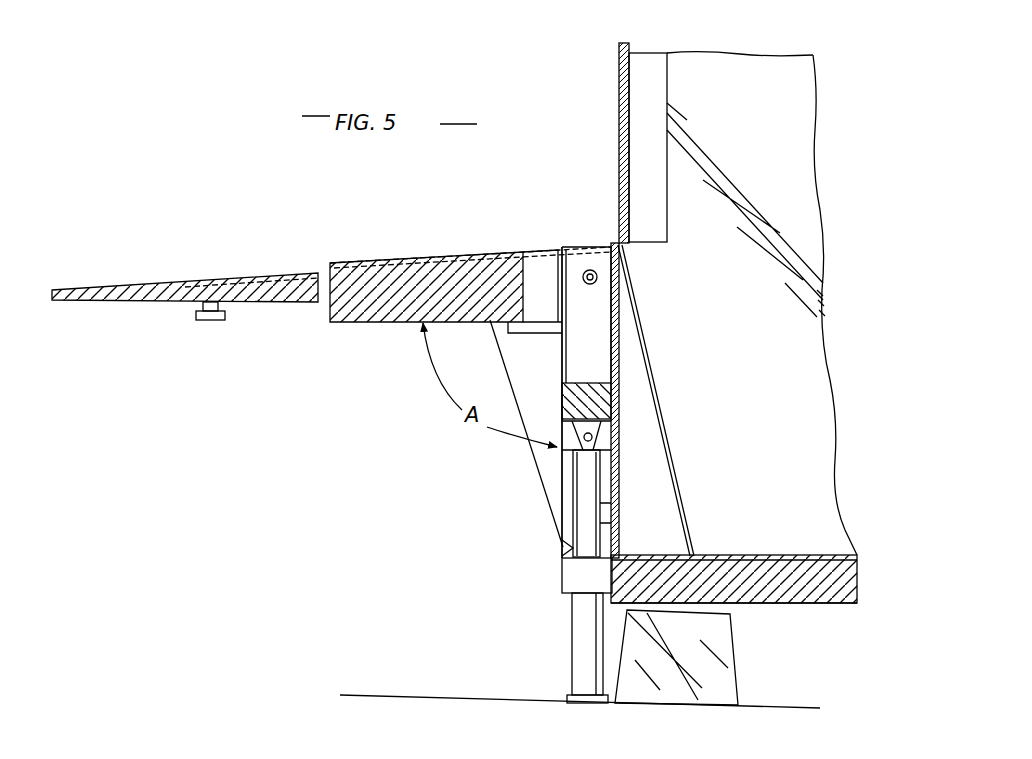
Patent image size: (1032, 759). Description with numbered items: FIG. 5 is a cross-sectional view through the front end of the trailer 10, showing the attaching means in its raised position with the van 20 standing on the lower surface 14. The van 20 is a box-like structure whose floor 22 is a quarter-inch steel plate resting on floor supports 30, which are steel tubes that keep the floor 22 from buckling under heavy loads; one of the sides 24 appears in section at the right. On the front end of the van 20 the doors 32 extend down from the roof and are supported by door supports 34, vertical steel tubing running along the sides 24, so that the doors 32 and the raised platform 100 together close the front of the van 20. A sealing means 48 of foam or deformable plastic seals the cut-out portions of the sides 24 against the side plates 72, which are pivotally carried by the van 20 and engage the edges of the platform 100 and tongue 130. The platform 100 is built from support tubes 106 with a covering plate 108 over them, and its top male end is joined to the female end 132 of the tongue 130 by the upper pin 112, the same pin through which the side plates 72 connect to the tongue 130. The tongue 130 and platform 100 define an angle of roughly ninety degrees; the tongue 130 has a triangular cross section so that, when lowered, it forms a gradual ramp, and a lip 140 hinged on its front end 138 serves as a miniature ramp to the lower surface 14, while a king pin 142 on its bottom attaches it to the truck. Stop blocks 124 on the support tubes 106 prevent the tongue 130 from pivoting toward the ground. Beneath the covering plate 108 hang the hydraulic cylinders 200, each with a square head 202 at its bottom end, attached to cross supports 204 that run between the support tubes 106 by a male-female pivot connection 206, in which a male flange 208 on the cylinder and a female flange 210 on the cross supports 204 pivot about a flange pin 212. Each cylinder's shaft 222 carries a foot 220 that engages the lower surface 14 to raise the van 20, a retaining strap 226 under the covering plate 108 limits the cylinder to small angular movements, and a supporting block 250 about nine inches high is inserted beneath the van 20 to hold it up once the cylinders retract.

The trailer 10 is at (555, 195).
The lower surface 14 is at (393, 695).
The van 20 is at (760, 155).
The floor 22 is at (745, 558).
The sides 24 is at (798, 72).
The floor supports 30 is at (800, 598).
The doors 32 is at (620, 95).
The door supports 34 is at (665, 83).
The sealing means 48 is at (668, 497).
The side plates 72 is at (652, 530).
The platform 100 is at (620, 330).
The support tubes 106 is at (588, 370).
The covering plate 108 is at (620, 348).
The upper pin 112 is at (590, 268).
The stop blocks 124 is at (533, 330).
The tongue 130 is at (365, 321).
The female end 132 is at (530, 248).
The front end 138 is at (242, 276).
The lip 140 is at (115, 302).
The king pin 142 is at (210, 320).
The hydraulic cylinders 200 is at (585, 507).
The square head 202 is at (565, 575).
The cross supports 204 is at (565, 396).
The male-female pivot connection 206 is at (607, 437).
The male flange 208 is at (615, 446).
The female flange 210 is at (610, 421).
The flange pin 212 is at (575, 450).
The foot 220 is at (570, 693).
The shaft 222 is at (575, 655).
The retaining strap 226 is at (565, 548).
The supporting block 250 is at (710, 670).